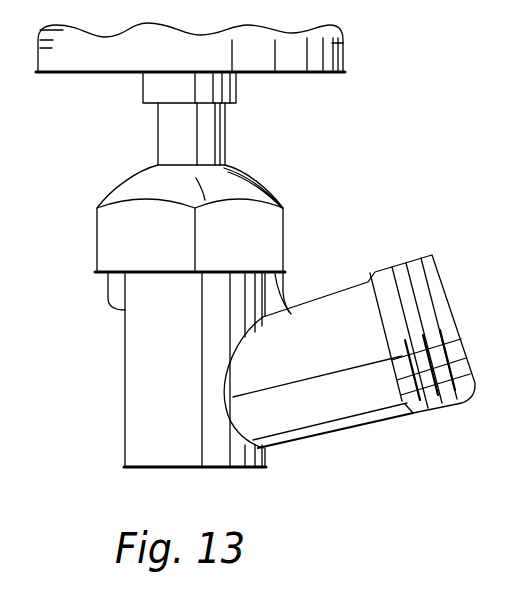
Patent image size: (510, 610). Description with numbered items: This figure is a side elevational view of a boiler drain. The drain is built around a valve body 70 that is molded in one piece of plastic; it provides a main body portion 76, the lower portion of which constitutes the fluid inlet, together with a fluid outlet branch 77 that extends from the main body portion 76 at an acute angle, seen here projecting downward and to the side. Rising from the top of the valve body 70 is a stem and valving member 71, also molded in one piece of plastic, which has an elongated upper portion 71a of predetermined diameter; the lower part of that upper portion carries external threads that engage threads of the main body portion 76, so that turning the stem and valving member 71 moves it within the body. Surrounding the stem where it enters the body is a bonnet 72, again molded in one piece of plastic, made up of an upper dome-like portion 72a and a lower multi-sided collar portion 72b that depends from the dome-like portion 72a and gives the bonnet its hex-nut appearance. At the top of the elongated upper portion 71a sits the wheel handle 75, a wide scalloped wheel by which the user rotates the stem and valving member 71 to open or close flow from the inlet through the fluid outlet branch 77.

The valve body 70 is at (113, 387).
The stem and valving member 71 is at (232, 143).
The elongated upper portion 71a is at (157, 133).
The bonnet 72 is at (284, 206).
The upper dome-like portion 72a is at (262, 180).
The lower multi-sided collar portion 72b is at (287, 240).
The wheel handle 75 is at (345, 57).
The main body portion 76 is at (122, 441).
The fluid outlet branch 77 is at (331, 297).